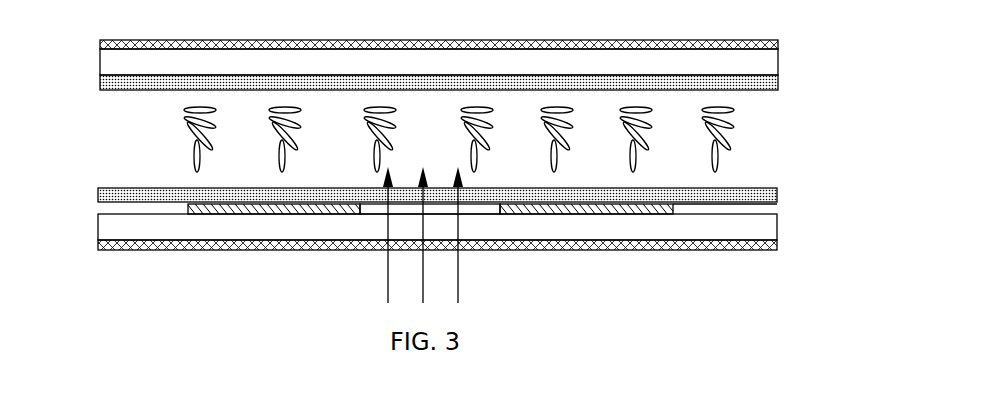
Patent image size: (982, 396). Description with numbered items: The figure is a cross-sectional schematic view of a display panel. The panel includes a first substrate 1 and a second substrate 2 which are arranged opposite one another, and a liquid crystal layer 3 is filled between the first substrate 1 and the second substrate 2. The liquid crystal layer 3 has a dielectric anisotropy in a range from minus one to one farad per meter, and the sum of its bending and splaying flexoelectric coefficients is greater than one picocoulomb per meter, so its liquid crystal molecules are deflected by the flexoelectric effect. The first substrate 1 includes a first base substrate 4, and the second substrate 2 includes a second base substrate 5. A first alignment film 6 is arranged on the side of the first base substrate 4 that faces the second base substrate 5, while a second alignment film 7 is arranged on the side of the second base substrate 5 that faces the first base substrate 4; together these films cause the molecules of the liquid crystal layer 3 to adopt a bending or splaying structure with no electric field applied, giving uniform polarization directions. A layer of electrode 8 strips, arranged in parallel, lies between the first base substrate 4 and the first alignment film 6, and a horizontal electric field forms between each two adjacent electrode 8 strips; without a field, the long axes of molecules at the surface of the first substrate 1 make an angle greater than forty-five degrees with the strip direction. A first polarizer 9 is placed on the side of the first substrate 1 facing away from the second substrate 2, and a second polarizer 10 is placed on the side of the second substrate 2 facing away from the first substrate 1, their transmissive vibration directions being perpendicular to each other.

The first substrate 1 is at (78, 217).
The second substrate 2 is at (78, 60).
The liquid crystal layer 3 is at (93, 145).
The first base substrate 4 is at (760, 228).
The second base substrate 5 is at (757, 62).
The first alignment film 6 is at (762, 195).
The second alignment film 7 is at (758, 83).
The electrode 8 is at (673, 209).
The first polarizer 9 is at (758, 245).
The second polarizer 10 is at (758, 44).